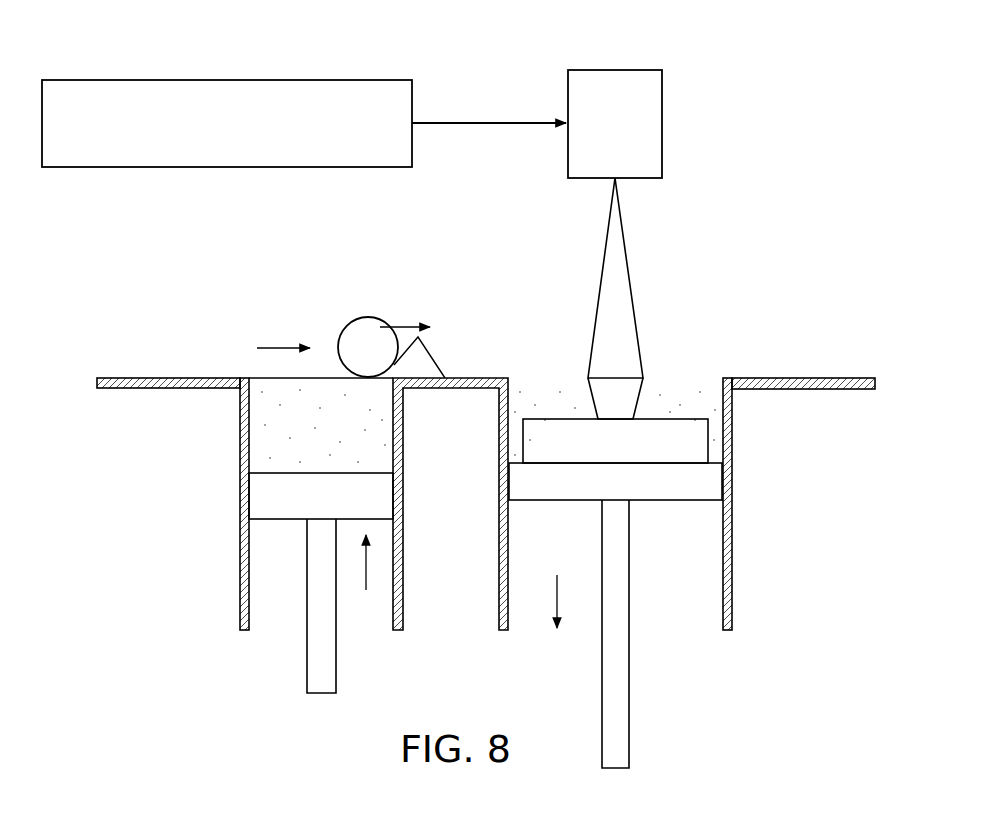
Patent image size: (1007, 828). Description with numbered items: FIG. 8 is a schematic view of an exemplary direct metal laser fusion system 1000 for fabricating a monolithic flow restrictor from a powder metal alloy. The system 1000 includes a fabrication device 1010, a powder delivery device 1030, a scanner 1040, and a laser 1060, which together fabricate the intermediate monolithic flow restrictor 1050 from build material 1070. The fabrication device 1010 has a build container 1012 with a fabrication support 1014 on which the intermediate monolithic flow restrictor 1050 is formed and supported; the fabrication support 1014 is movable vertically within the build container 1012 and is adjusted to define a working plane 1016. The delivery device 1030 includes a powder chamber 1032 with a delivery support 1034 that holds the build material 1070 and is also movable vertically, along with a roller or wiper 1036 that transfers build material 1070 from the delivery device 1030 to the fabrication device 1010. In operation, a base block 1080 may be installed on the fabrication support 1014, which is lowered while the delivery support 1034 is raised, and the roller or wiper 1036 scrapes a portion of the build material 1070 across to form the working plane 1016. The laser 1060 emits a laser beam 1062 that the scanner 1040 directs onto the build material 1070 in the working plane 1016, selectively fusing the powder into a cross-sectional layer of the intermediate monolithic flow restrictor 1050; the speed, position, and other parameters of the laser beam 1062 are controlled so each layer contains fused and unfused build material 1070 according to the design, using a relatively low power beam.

The DMLF system 1000 is at (781, 91).
The fabrication device 1010 is at (762, 512).
The build container 1012 is at (730, 405).
The fabrication support 1014 is at (683, 501).
The working plane 1016 is at (703, 380).
The powder delivery device 1030 is at (161, 485).
The powder chamber 1032 is at (243, 440).
The delivery support 1034 is at (259, 492).
The roller or wiper 1036 is at (368, 317).
The scanner 1040 is at (616, 69).
The intermediate monolithic flow restrictor 1050 is at (578, 380).
The laser 1060 is at (234, 79).
The laser beam 1062 is at (495, 121).
The build material 1070 is at (259, 418).
The base block 1080 is at (563, 452).